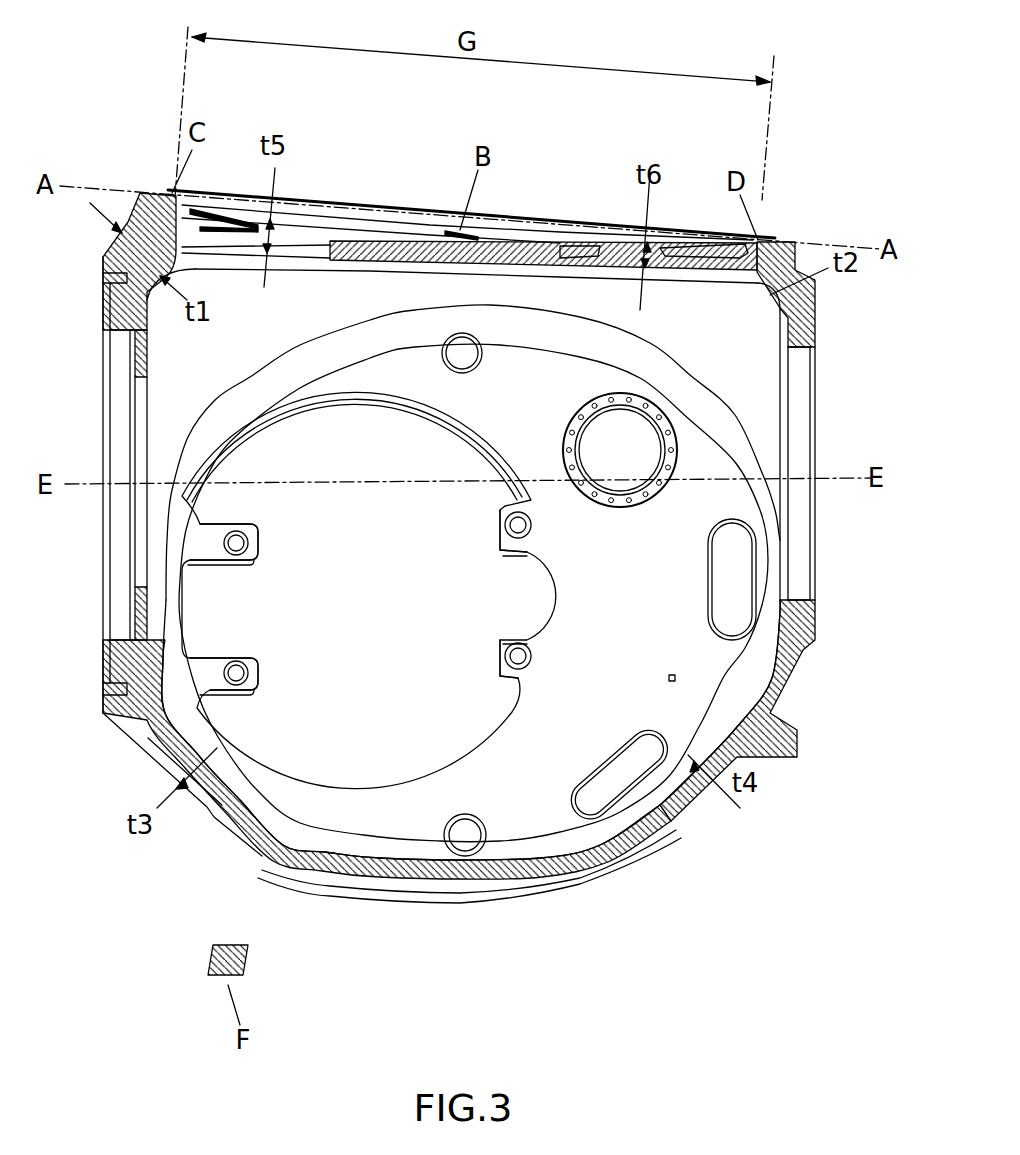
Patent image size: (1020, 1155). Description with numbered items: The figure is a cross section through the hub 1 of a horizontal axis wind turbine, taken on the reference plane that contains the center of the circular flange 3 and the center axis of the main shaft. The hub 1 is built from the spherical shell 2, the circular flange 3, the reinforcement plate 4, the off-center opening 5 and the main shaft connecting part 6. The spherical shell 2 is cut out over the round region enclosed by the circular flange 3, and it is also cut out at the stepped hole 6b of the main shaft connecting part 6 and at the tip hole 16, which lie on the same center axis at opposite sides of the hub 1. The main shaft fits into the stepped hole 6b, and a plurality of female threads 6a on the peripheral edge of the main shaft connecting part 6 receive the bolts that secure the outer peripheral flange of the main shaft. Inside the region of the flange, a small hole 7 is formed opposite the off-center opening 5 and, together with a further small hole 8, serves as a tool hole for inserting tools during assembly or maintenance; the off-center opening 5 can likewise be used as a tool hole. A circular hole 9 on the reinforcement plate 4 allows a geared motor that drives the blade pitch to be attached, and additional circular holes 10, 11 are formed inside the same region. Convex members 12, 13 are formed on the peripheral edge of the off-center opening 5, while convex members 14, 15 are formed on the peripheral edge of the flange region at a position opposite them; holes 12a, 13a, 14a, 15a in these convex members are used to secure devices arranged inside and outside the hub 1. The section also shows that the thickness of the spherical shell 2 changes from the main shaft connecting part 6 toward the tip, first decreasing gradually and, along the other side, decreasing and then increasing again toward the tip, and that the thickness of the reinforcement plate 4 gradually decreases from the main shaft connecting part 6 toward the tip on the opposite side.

The hub 1 is at (552, 160).
The spherical shell 2 is at (375, 290).
The circular flange 3 is at (162, 192).
The reinforcement plate 4 is at (610, 245).
The off-center opening 5 is at (340, 235).
The main shaft connecting part 6 is at (103, 322).
The female thread 6a is at (103, 276).
The stepped hole 6b is at (120, 595).
The small hole 7 is at (715, 605).
The small hole 8 is at (613, 775).
The circular hole 9 is at (640, 410).
The circular hole 10 is at (465, 836).
The circular hole 11 is at (480, 363).
The convex member 12 is at (500, 672).
The hole 12a is at (500, 645).
The convex member 13 is at (500, 538).
The hole 13a is at (500, 513).
The convex member 14 is at (252, 683).
The hole 14a is at (257, 657).
The convex member 15 is at (253, 550).
The hole 15a is at (257, 530).
The tip hole 16 is at (798, 567).